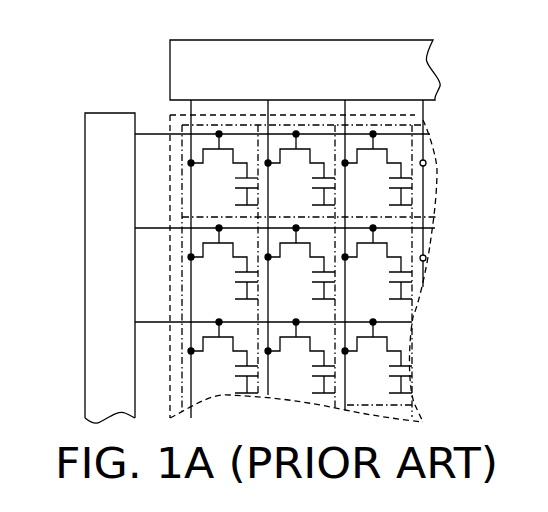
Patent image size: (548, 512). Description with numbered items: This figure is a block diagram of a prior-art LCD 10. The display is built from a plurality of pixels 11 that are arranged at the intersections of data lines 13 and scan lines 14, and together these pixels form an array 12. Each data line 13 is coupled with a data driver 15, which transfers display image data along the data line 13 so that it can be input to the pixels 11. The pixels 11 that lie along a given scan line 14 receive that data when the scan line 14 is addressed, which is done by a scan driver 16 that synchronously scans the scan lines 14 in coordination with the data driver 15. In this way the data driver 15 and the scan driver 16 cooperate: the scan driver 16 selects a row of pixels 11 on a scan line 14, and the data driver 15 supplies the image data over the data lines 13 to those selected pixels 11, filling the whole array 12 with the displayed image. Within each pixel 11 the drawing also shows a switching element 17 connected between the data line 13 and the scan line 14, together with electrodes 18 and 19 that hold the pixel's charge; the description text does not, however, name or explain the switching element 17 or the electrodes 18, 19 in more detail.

The LCD 10 is at (467, 32).
The pixel 11 is at (205, 125).
The array 12 is at (423, 258).
The data line 13 is at (347, 178).
The scan line 14 is at (155, 132).
The data driver 15 is at (362, 40).
The scan driver 16 is at (85, 277).
The thin film transistor 17 is at (237, 160).
The gate electrode 18 is at (231, 181).
The pixel electrode 19 is at (231, 204).